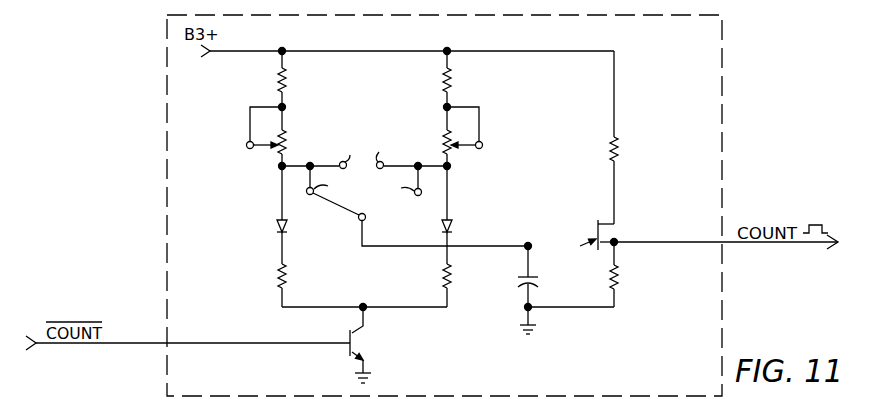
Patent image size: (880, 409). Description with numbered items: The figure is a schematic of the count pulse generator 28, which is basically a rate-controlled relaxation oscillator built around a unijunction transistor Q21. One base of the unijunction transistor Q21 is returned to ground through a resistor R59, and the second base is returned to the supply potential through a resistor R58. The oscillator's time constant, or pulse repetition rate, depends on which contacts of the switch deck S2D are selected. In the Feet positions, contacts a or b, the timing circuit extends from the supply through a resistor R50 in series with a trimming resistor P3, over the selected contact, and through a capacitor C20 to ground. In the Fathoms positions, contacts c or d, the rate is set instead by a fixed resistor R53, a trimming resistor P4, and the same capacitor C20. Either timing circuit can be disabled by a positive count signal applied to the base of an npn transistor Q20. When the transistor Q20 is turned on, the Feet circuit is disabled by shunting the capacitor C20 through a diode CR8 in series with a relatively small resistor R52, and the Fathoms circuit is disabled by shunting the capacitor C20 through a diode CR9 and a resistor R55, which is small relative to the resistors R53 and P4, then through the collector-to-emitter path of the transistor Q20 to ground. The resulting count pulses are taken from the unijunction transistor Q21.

The count pulse generator 28 is at (475, 372).
The resistor R50 is at (261, 79).
The fixed resistor R53 is at (464, 79).
The trimming resistor P3 is at (278, 136).
The trimming resistor P4 is at (450, 136).
The switch deck S2D is at (364, 179).
The diode CR8 is at (300, 215).
The diode CR9 is at (467, 215).
The resistor R52 is at (300, 285).
The resistor R55 is at (429, 285).
The capacitor C20 is at (546, 290).
The resistor R58 is at (633, 137).
The resistor R59 is at (632, 274).
The npn transistor Q20 is at (372, 345).
The unijunction transistor Q21 is at (617, 234).